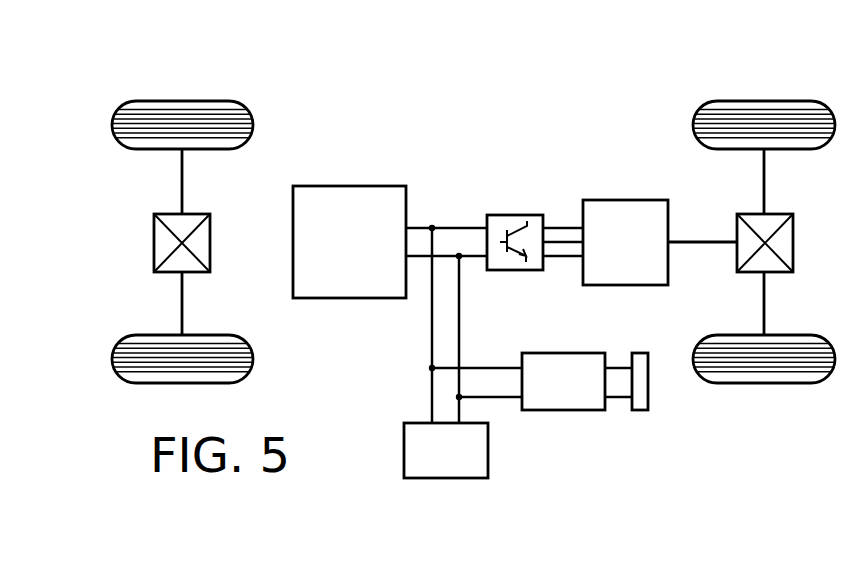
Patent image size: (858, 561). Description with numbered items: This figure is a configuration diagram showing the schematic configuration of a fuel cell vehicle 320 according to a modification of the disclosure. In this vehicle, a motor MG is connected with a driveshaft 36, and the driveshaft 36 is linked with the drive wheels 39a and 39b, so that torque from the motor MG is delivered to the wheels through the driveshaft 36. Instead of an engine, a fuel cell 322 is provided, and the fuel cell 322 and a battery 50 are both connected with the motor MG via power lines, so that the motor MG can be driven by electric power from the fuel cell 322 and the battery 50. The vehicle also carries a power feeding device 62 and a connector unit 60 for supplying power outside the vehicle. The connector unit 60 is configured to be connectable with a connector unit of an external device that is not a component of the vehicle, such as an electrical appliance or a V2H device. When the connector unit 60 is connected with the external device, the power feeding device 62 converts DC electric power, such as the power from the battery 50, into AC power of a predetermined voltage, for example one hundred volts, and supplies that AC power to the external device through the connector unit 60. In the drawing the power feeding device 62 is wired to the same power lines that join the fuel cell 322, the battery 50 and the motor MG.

The fuel cell vehicle 320 is at (633, 90).
The fuel cell 322 is at (350, 185).
The motor MG is at (626, 199).
The driveshaft 36 is at (695, 237).
The drive wheel 39a is at (765, 101).
The drive wheel 39b is at (765, 383).
The power feeding device 62 is at (563, 352).
The connector unit 60 is at (642, 352).
The battery 50 is at (490, 451).